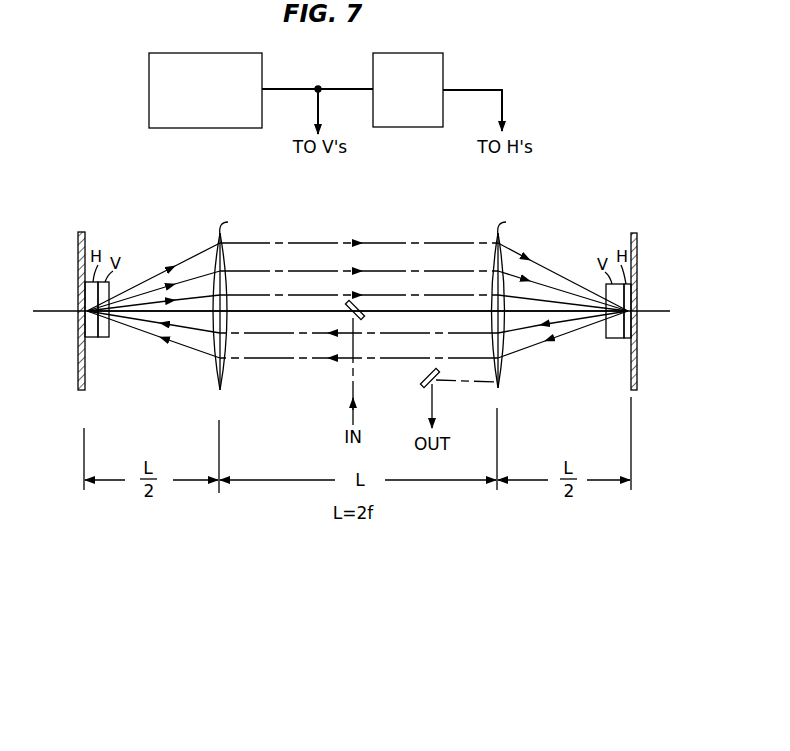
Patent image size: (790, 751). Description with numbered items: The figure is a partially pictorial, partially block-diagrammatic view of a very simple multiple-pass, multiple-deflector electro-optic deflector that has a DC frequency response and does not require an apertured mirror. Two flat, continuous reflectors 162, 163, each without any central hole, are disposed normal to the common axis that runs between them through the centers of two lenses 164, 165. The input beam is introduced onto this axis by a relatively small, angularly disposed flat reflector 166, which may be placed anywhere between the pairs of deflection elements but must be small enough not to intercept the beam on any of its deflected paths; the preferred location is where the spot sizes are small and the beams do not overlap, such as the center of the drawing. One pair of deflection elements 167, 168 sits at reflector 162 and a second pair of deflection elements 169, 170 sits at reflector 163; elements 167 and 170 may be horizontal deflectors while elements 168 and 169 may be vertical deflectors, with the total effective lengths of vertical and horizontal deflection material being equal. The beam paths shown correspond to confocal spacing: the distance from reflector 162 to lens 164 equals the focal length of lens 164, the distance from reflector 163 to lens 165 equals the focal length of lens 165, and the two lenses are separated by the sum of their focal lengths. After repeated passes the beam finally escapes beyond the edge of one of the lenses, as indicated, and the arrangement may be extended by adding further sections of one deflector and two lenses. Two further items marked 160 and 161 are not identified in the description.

The synchronous modulator 160 is at (149, 70).
The 90 degree phase shifter 161 is at (443, 68).
The reflector 162 is at (80, 232).
The reflector 163 is at (633, 233).
The lens 164 is at (228, 365).
The lens 165 is at (506, 368).
The flat reflector 166 is at (350, 302).
The deflection element 167 is at (93, 337).
The deflection element 168 is at (105, 337).
The deflection element 169 is at (612, 338).
The deflection element 170 is at (626, 338).